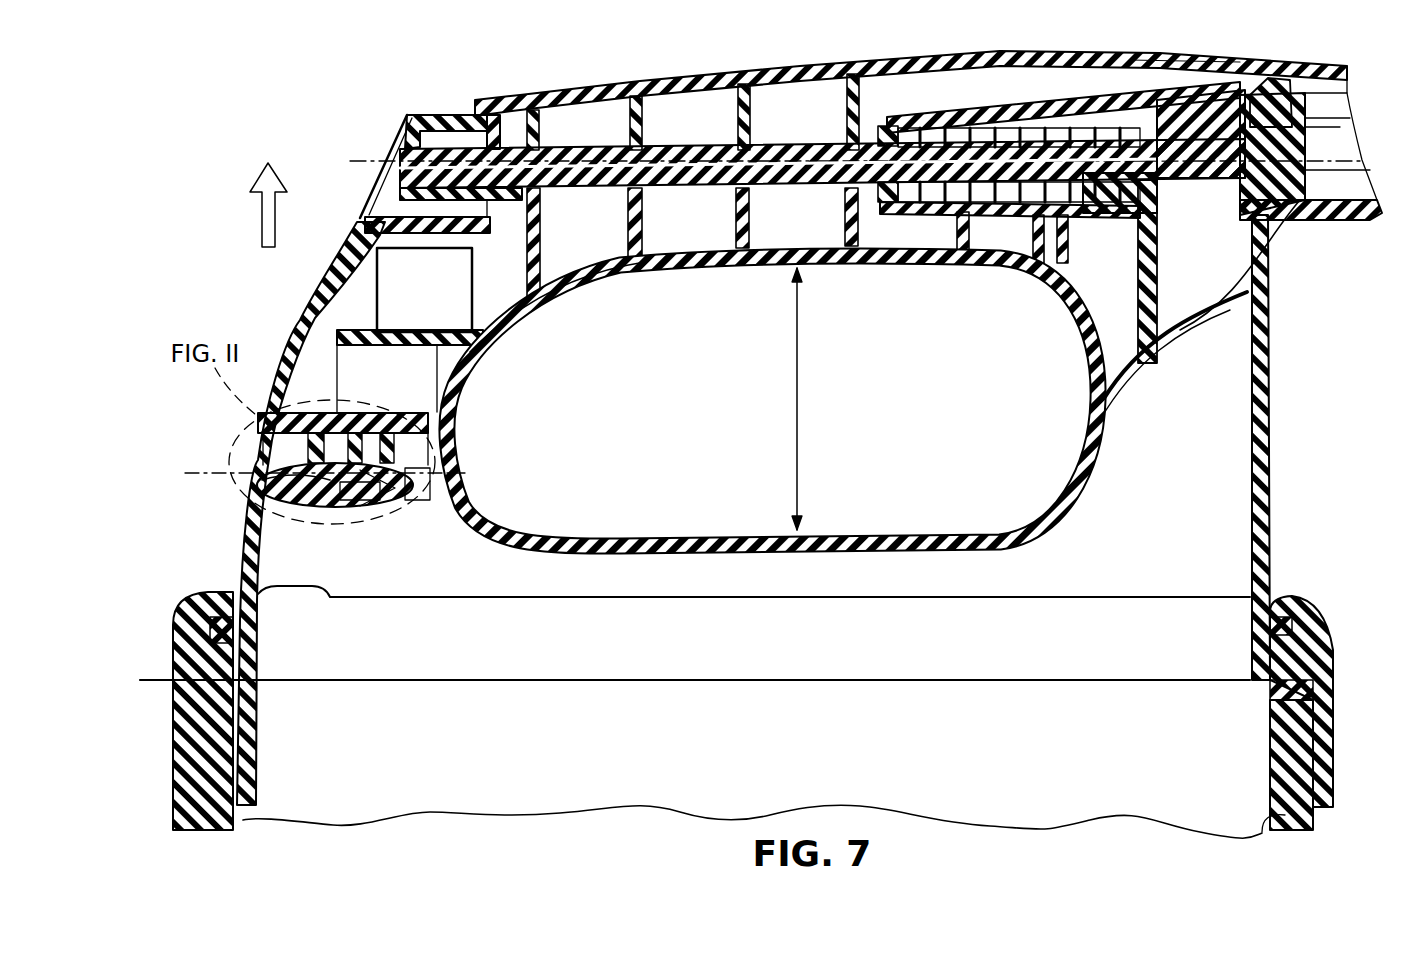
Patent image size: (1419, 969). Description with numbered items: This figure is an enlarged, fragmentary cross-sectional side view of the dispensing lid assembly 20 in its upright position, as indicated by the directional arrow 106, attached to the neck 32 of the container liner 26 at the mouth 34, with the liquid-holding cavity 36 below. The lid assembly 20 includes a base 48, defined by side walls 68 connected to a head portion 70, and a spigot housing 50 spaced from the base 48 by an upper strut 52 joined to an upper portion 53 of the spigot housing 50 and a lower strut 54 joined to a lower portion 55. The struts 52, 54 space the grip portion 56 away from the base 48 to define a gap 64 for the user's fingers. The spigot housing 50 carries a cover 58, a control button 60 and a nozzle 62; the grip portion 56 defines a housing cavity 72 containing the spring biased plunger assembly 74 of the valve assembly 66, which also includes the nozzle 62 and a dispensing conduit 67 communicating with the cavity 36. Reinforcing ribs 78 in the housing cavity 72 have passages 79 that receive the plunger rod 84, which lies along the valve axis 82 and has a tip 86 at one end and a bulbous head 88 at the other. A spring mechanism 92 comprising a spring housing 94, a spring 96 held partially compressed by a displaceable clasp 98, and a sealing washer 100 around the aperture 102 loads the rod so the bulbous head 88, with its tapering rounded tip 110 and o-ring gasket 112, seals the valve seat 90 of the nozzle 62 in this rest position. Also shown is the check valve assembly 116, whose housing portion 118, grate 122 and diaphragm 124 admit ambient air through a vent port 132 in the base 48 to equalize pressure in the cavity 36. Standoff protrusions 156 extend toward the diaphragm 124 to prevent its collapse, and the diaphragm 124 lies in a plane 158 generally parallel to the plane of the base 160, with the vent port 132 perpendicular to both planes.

The dispensing lid assembly 20 is at (270, 140).
The container liner 26 is at (1335, 794).
The neck 32 is at (1325, 700).
The mouth 34 is at (1300, 598).
The cavity 36 is at (1265, 820).
The base 48 is at (1340, 633).
The spigot housing 50 is at (760, 52).
The upper strut 52 is at (292, 345).
The upper portion 53 is at (556, 305).
The lower strut 54 is at (1270, 512).
The lower portion 55 is at (1090, 328).
The grip portion 56 is at (745, 272).
The cover 58 is at (882, 66).
The control button 60 is at (440, 115).
The nozzle 62 is at (1340, 75).
The gap 64 is at (800, 385).
The valve assembly 66 is at (1160, 64).
The dispensing conduit 67 is at (1255, 300).
The side walls 68 is at (1330, 742).
The head portion 70 is at (890, 540).
The housing cavity 72 is at (388, 268).
The spring biased plunger assembly 74 is at (835, 104).
The reinforcing ribs 78 is at (612, 236).
The passages 79 is at (730, 130).
The valve axis 82 is at (376, 161).
The plunger rod 84 is at (672, 192).
The tip 86 is at (465, 148).
The bulbous head 88 is at (1258, 78).
The valve seat 90 is at (1328, 116).
The spring mechanism 92 is at (972, 84).
The spring housing 94 is at (1028, 97).
The spring 96 is at (925, 140).
The displaceable clasp 98 is at (1055, 125).
The sealing washer 100 is at (1115, 135).
The aperture 102 is at (1170, 120).
The directional arrow 106 is at (258, 208).
The tapering rounded tip 110 is at (1355, 176).
The o-ring gasket 112 is at (1300, 220).
The check valve assembly 116 is at (376, 522).
The housing portion 118 is at (417, 476).
The grate 122 is at (330, 508).
The diaphragm 124 is at (290, 505).
The vent port 132 is at (248, 432).
The standoff protrusions 156 is at (400, 420).
The plane 158 is at (215, 473).
The plane of the base 160 is at (150, 680).